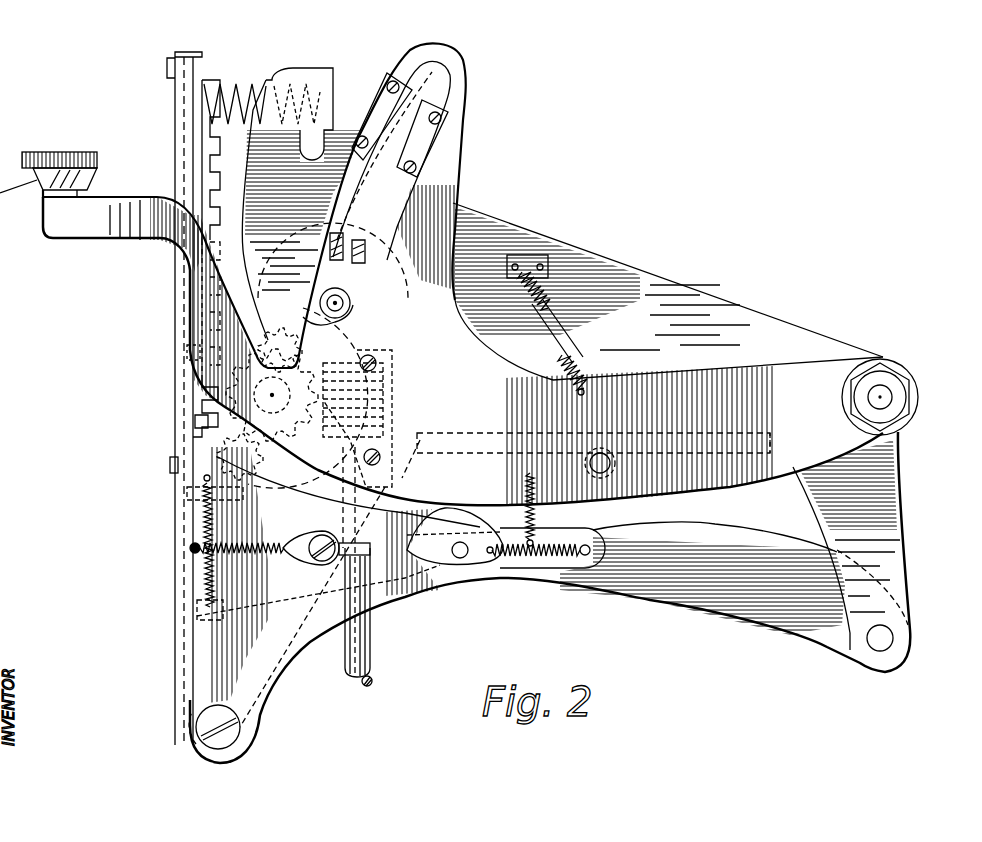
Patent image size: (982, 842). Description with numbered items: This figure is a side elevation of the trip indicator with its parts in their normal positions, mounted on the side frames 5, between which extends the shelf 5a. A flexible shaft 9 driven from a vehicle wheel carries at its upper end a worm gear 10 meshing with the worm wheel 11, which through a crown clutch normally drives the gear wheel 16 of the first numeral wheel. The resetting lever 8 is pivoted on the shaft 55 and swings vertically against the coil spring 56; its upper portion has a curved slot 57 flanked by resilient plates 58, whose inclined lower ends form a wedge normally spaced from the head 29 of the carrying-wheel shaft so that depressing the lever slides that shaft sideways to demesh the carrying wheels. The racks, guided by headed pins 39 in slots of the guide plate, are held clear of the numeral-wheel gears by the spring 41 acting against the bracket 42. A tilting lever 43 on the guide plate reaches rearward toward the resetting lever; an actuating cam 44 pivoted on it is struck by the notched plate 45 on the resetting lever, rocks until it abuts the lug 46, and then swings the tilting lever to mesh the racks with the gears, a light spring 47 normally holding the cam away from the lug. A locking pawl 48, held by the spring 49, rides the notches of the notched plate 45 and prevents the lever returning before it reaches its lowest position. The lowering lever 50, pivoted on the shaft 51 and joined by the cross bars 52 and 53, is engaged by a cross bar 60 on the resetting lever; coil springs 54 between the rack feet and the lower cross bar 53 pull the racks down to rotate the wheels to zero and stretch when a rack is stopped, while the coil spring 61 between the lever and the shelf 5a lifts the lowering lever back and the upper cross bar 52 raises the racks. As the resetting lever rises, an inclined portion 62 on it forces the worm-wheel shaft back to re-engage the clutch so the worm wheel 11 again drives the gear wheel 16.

The side frames 5 is at (705, 311).
The shelf 5a is at (773, 439).
The resetting lever 8 is at (104, 237).
The flexible shaft 9 is at (371, 685).
The worm gear 10 is at (382, 401).
The worm wheel 11 is at (205, 422).
The gear wheel 16 is at (190, 393).
The head 29 is at (352, 310).
The headed pins 39 is at (172, 470).
The spring 41 is at (232, 88).
The bracket 42 is at (327, 78).
The tilting lever 43 is at (497, 570).
The actuating cam 44 is at (443, 559).
The notched plate 45 is at (428, 430).
The lug 46 is at (440, 590).
The spring 47 is at (553, 556).
The locking pawl 48 is at (368, 560).
The spring 49 is at (278, 544).
The lowering lever 50 is at (742, 613).
The shaft 51 is at (888, 648).
The cross bar 52 is at (242, 499).
The cross bar 53 is at (197, 618).
The coil springs 54 is at (200, 582).
The shaft 55 is at (893, 397).
The coil spring 56 is at (213, 159).
The curved slot 57 is at (430, 87).
The resilient plates 58 is at (425, 146).
The cross bar 60 is at (607, 473).
The coil spring 61 is at (523, 486).
The inclined portion 62 is at (190, 352).